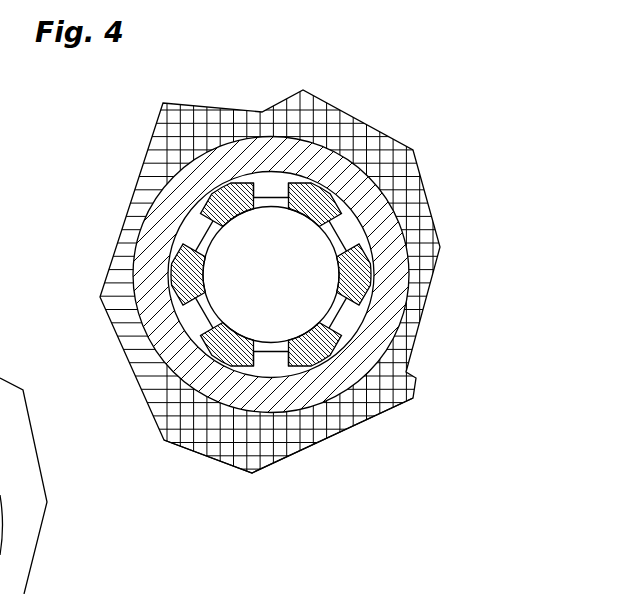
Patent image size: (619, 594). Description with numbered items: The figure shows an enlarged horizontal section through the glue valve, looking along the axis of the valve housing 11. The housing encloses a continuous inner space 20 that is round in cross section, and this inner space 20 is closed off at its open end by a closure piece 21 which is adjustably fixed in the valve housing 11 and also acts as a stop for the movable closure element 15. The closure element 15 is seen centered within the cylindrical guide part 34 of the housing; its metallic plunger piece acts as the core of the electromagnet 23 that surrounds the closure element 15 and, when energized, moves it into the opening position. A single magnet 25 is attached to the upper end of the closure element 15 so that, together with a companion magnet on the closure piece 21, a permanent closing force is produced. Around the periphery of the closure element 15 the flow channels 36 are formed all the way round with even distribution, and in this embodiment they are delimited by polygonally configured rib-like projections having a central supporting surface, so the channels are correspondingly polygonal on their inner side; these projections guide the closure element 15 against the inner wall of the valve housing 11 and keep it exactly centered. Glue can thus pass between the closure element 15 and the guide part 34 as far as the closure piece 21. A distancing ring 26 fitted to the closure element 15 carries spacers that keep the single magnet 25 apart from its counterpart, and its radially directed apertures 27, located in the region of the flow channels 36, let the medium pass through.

The valve housing 11 is at (216, 462).
The closure element 15 is at (320, 187).
The inner space 20 is at (282, 365).
The closure piece 21 is at (383, 138).
The electromagnet 23 is at (165, 160).
The single magnet 25 is at (281, 279).
The distancing ring 26 is at (200, 347).
The apertures 27 is at (200, 242).
The guide part 34 is at (163, 310).
The flow channels 36 is at (262, 183).